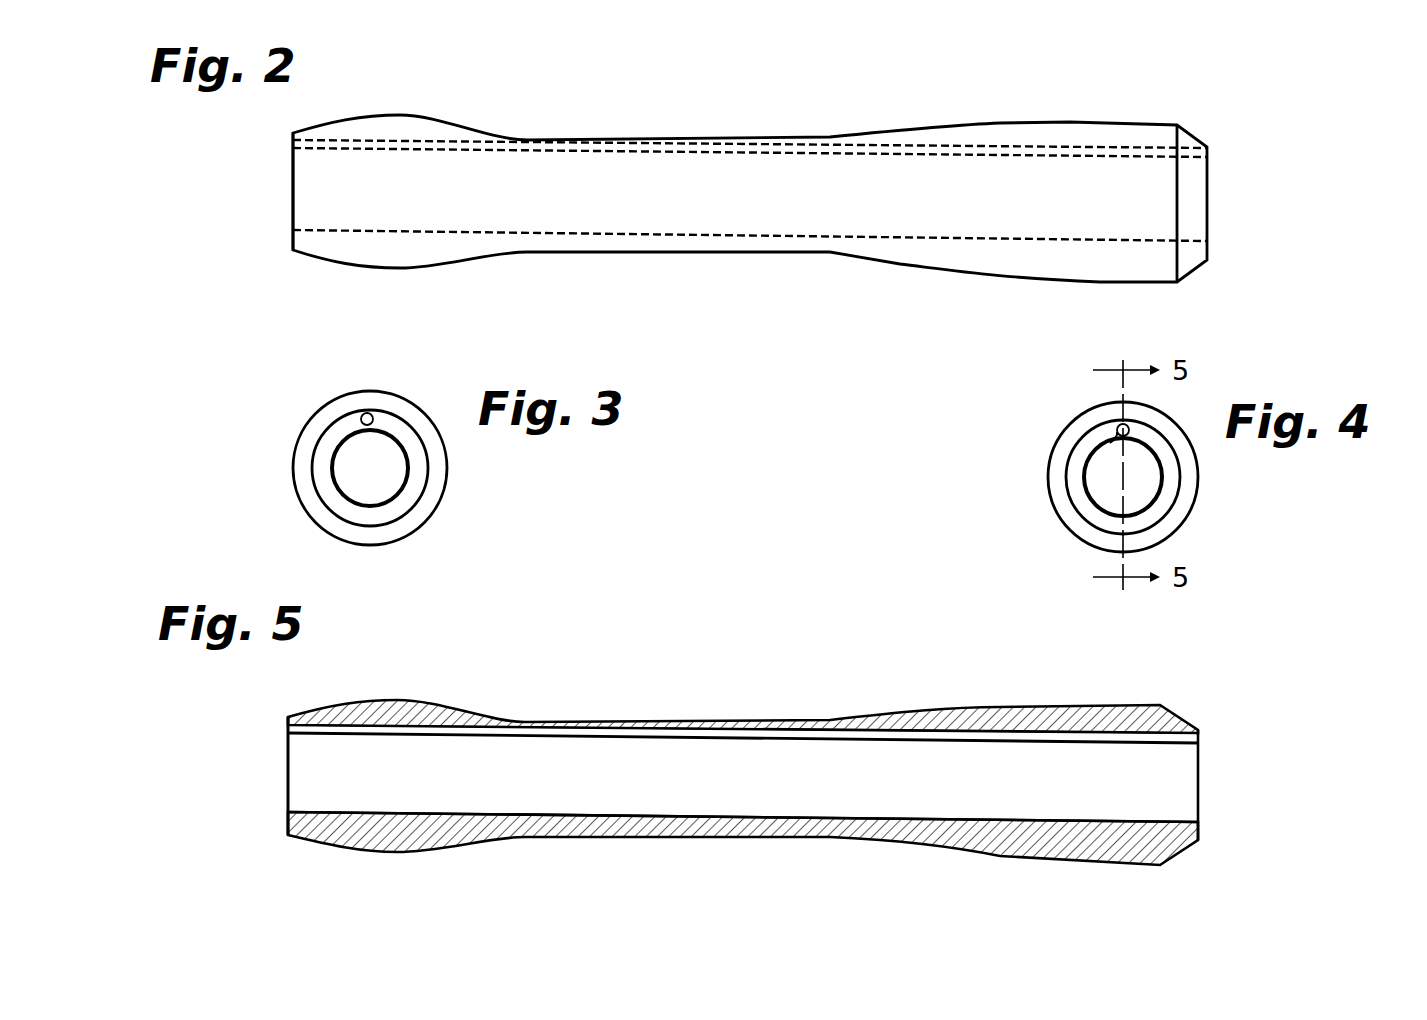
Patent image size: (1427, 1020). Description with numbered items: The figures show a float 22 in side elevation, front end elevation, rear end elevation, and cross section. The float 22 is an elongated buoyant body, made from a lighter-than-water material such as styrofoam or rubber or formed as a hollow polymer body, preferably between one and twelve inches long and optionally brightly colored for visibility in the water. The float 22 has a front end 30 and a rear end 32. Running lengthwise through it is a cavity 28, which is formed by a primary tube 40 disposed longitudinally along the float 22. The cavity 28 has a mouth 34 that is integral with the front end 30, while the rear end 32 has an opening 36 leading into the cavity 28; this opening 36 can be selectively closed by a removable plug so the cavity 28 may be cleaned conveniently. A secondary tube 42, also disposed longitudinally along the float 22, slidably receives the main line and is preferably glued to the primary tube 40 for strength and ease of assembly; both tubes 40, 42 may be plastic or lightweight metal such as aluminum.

In FIG. 2, the float 22 is at (810, 140).
In FIG. 3, the float 22 is at (405, 400).
In FIG. 4, the float 22 is at (1065, 425).
In FIG. 5, the float 22 is at (893, 712).
In FIG. 2, the cavity 28 is at (605, 185).
In FIG. 3, the cavity 28 is at (370, 465).
In FIG. 4, the cavity 28 is at (1117, 472).
In FIG. 5, the cavity 28 is at (718, 785).
In FIG. 2, the front end 30 is at (293, 243).
In FIG. 5, the front end 30 is at (288, 818).
In FIG. 2, the rear end 32 is at (1205, 260).
In FIG. 5, the rear end 32 is at (1198, 838).
In FIG. 2, the mouth 34 is at (322, 193).
In FIG. 3, the mouth 34 is at (405, 485).
In FIG. 5, the mouth 34 is at (322, 778).
In FIG. 2, the opening 36 is at (1185, 192).
In FIG. 4, the opening 36 is at (1145, 500).
In FIG. 5, the opening 36 is at (1185, 780).
In FIG. 2, the primary tube 40 is at (825, 237).
In FIG. 3, the primary tube 40 is at (330, 490).
In FIG. 4, the primary tube 40 is at (1163, 485).
In FIG. 5, the primary tube 40 is at (687, 822).
In FIG. 2, the secondary tube 42 is at (1115, 148).
In FIG. 3, the secondary tube 42 is at (367, 413).
In FIG. 4, the secondary tube 42 is at (1087, 460).
In FIG. 5, the secondary tube 42 is at (1065, 730).